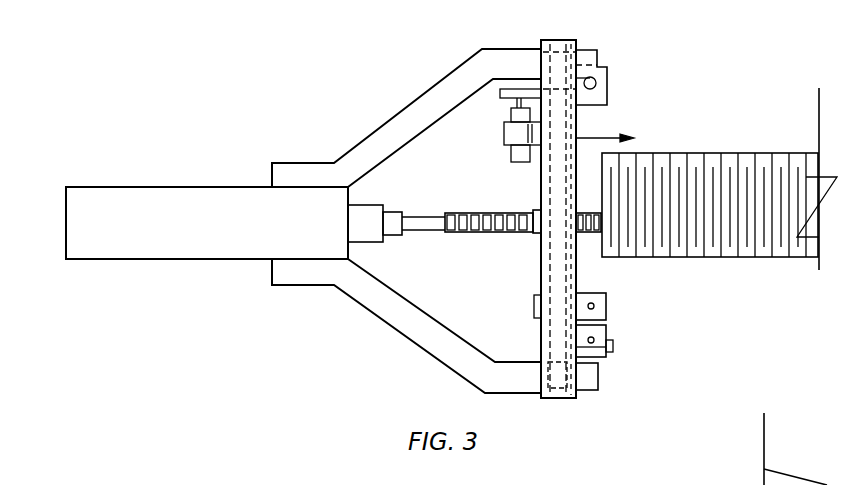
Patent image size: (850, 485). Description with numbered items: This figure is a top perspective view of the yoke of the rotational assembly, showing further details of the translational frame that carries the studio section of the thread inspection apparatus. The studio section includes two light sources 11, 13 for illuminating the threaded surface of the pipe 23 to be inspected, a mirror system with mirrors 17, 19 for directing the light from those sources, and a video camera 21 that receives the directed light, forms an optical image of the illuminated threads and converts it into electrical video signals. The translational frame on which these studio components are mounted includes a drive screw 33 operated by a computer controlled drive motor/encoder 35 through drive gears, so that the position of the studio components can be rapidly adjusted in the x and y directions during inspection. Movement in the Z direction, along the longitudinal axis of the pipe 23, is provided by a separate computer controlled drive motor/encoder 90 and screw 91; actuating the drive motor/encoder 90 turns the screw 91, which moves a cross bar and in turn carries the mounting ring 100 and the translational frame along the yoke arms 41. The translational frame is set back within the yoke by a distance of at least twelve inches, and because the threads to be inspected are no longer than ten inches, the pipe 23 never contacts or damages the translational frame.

The light source 11 is at (595, 305).
The second light source 13 is at (597, 332).
The mirror 17 is at (600, 345).
The mirror 19 is at (585, 55).
The video camera 21 is at (594, 97).
The pipe 23 is at (662, 165).
The drive screw 33 is at (406, 173).
The drive motor/encoder 35 is at (517, 115).
The yoke arms 41 is at (425, 336).
The drive motor/encoder 90 is at (362, 220).
The screw 91 is at (433, 223).
The mounting ring 100 is at (572, 368).